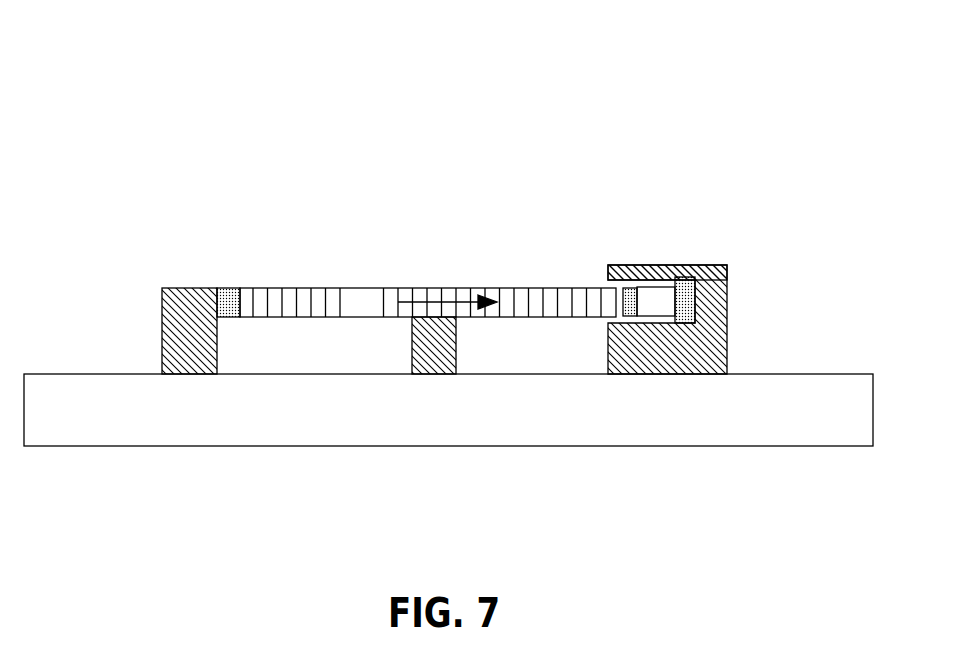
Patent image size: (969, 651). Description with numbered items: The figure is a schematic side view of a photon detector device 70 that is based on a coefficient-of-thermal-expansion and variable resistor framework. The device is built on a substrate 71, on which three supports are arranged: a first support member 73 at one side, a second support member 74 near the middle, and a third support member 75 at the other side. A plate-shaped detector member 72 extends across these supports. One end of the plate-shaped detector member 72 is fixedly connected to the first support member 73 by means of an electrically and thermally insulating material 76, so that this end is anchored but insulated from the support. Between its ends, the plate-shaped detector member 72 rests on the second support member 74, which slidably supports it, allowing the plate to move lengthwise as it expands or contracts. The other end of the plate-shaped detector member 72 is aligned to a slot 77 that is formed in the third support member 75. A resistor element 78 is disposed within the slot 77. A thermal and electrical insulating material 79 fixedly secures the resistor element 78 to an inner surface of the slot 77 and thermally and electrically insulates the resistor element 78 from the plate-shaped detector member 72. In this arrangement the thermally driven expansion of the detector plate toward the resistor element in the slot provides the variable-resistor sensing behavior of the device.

The photon detector device 70 is at (465, 47).
The substrate 71 is at (101, 444).
The plate-shaped detector member 72 is at (323, 287).
The first support member 73 is at (178, 352).
The second support member 74 is at (410, 338).
The third support member 75 is at (622, 333).
The electrically and thermally insulating material 76 is at (225, 287).
The slot 77 is at (600, 281).
The resistor element 78 is at (667, 303).
The thermal and electrical insulating material 79 is at (630, 297).